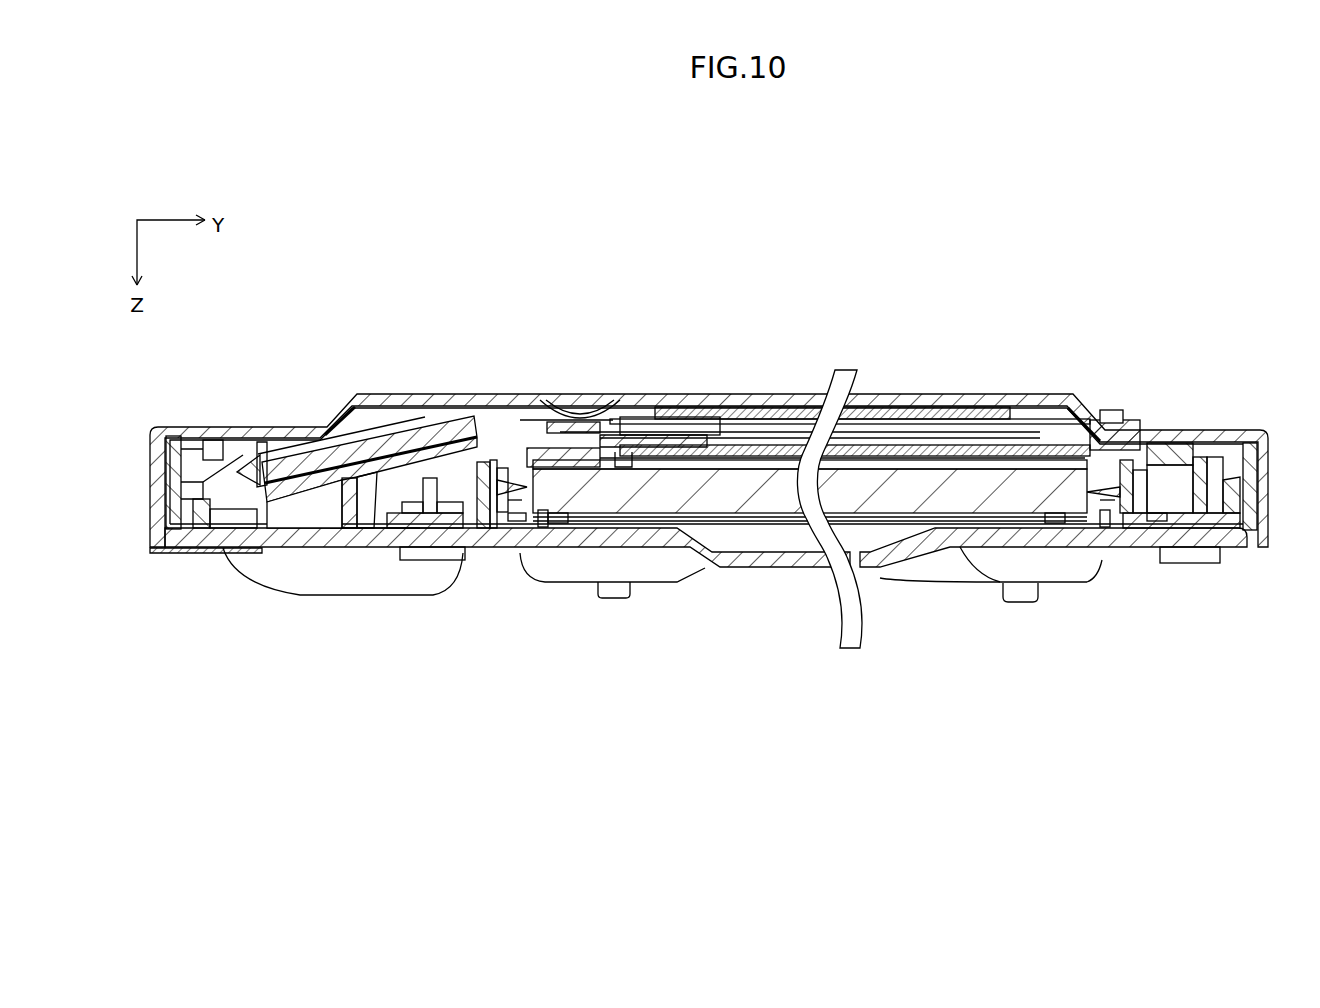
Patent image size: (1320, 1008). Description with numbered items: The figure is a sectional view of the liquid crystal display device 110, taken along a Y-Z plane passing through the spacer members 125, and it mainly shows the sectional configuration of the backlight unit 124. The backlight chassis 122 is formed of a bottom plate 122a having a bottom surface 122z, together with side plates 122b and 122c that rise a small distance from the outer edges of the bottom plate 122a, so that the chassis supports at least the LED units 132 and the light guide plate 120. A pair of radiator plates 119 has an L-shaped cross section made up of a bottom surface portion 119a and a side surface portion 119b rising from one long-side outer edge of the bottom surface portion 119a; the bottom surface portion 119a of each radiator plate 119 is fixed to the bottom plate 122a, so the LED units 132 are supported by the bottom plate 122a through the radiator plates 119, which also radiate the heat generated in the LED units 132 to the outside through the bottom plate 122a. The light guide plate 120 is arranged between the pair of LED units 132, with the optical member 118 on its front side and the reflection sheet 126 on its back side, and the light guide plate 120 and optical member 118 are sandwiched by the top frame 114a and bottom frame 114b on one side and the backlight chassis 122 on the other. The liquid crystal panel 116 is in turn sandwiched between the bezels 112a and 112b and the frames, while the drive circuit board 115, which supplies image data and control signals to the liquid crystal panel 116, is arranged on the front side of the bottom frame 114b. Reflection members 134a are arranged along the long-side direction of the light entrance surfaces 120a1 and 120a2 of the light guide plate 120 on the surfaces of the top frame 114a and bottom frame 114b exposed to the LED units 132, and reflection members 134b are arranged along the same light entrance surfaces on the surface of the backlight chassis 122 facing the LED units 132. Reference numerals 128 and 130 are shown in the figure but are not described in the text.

The liquid crystal display device 110 is at (709, 458).
The bezel 112a is at (972, 398).
The bezel 112b is at (378, 396).
The top frame 114a is at (1062, 425).
The bottom frame 114b is at (243, 475).
The drive circuit board 115 is at (330, 462).
The liquid crystal panel 116 is at (742, 416).
The optical member 118 is at (872, 445).
The radiator plate 119 is at (814, 604).
The bottom surface portion 119a is at (430, 512).
The side surface portion 119b is at (447, 523).
The light guide plate 120 is at (717, 490).
The light entrance surface 120a1 is at (522, 455).
The light entrance surface 120a2 is at (1105, 432).
The backlight chassis 122 is at (550, 540).
The bottom plate 122a is at (370, 535).
The side plate 122b is at (172, 505).
The side plate 122c is at (1250, 505).
The bottom surface 122z is at (306, 522).
The backlight unit 124 is at (683, 641).
The spacer member 125 is at (522, 502).
The reflection sheet 126 is at (647, 520).
The post 128 is at (478, 470).
The cushion 130 is at (495, 528).
The LED unit 132 is at (544, 530).
The reflection member 134a is at (502, 470).
The reflection member 134b is at (560, 525).